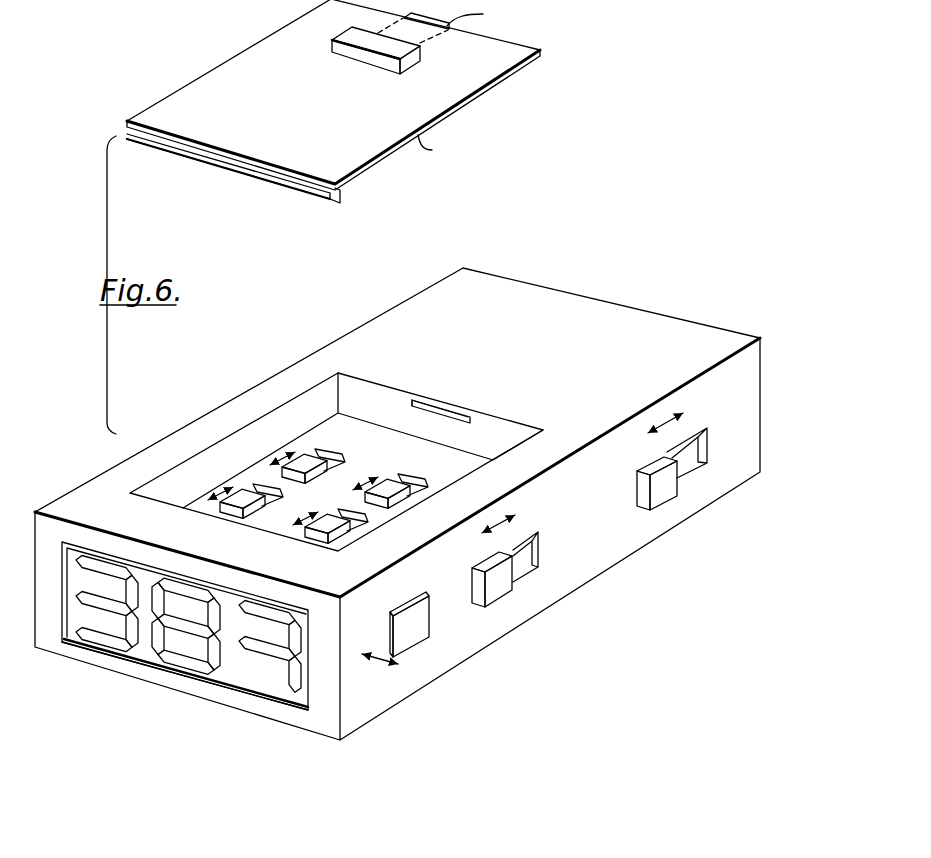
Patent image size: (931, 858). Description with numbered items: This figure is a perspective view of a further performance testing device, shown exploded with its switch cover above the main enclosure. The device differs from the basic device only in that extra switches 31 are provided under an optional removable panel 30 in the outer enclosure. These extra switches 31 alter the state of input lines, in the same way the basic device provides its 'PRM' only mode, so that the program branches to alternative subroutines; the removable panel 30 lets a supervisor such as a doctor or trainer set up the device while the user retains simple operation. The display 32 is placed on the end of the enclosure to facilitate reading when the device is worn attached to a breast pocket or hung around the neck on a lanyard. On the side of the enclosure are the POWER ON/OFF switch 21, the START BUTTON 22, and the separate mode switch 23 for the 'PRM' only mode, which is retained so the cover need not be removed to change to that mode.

The optional removable panel 30 is at (204, 82).
The extra switches 31 is at (250, 488).
The display 32 is at (230, 686).
The POWER ON/OFF switch 21 is at (515, 590).
The START BUTTON 22 is at (413, 648).
The mode switch 23 is at (683, 485).